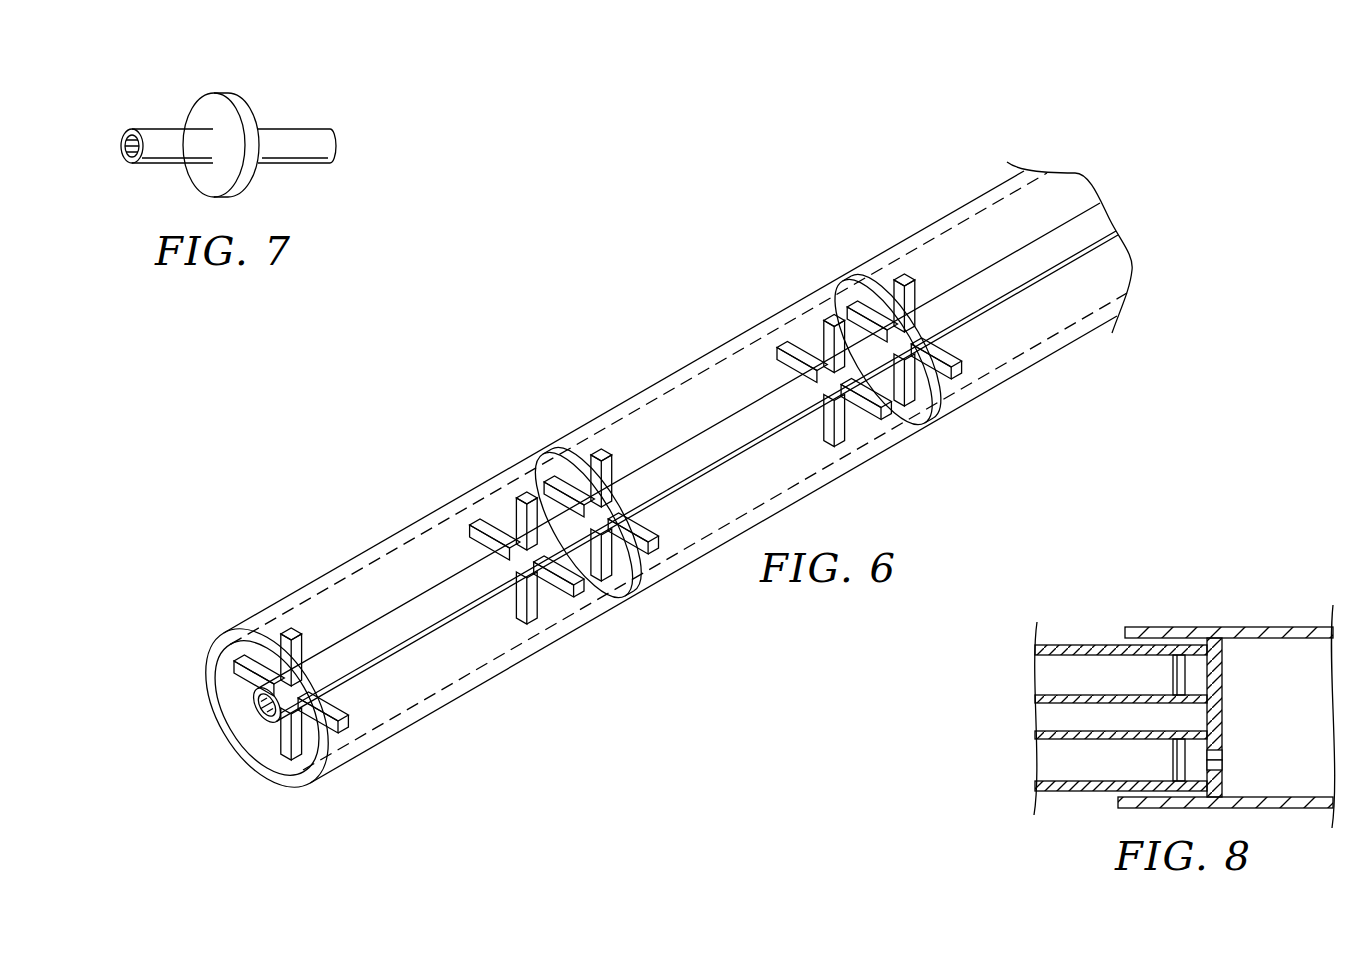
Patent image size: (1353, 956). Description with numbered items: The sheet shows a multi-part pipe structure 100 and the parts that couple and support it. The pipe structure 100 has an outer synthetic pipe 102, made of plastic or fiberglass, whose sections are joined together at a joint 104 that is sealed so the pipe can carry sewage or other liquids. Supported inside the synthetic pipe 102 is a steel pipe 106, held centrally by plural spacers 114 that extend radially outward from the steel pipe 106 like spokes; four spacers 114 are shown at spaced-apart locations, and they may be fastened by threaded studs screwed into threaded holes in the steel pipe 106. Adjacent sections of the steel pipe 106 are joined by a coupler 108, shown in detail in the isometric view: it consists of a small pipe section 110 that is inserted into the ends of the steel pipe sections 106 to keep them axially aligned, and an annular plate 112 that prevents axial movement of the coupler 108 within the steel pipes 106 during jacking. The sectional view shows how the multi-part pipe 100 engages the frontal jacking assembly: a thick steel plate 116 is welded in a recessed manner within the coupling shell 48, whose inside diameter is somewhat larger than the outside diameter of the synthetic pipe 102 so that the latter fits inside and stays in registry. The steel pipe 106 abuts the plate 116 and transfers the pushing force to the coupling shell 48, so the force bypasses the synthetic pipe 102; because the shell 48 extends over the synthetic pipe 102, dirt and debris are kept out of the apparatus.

In FIG. 8, the coupling shell 48 is at (1253, 627).
In FIG. 6, the multi-part pipe structure 100 is at (786, 293).
In FIG. 6, the outer synthetic pipe 102 is at (383, 542).
In FIG. 8, the outer synthetic pipe 102 is at (1063, 644).
In FIG. 6, the joint 104 is at (918, 431).
In FIG. 6, the steel pipe 106 is at (423, 632).
In FIG. 8, the steel pipe 106 is at (1120, 694).
In FIG. 7, the coupler 108 is at (256, 96).
In FIG. 6, the coupler 108 is at (610, 585).
In FIG. 7, the small pipe section 110 is at (162, 165).
In FIG. 7, the annular plate 112 is at (210, 110).
In FIG. 6, the spacer 114 is at (283, 754).
In FIG. 8, the spacer 114 is at (1172, 751).
In FIG. 8, the thick steel plate 116 is at (1222, 690).